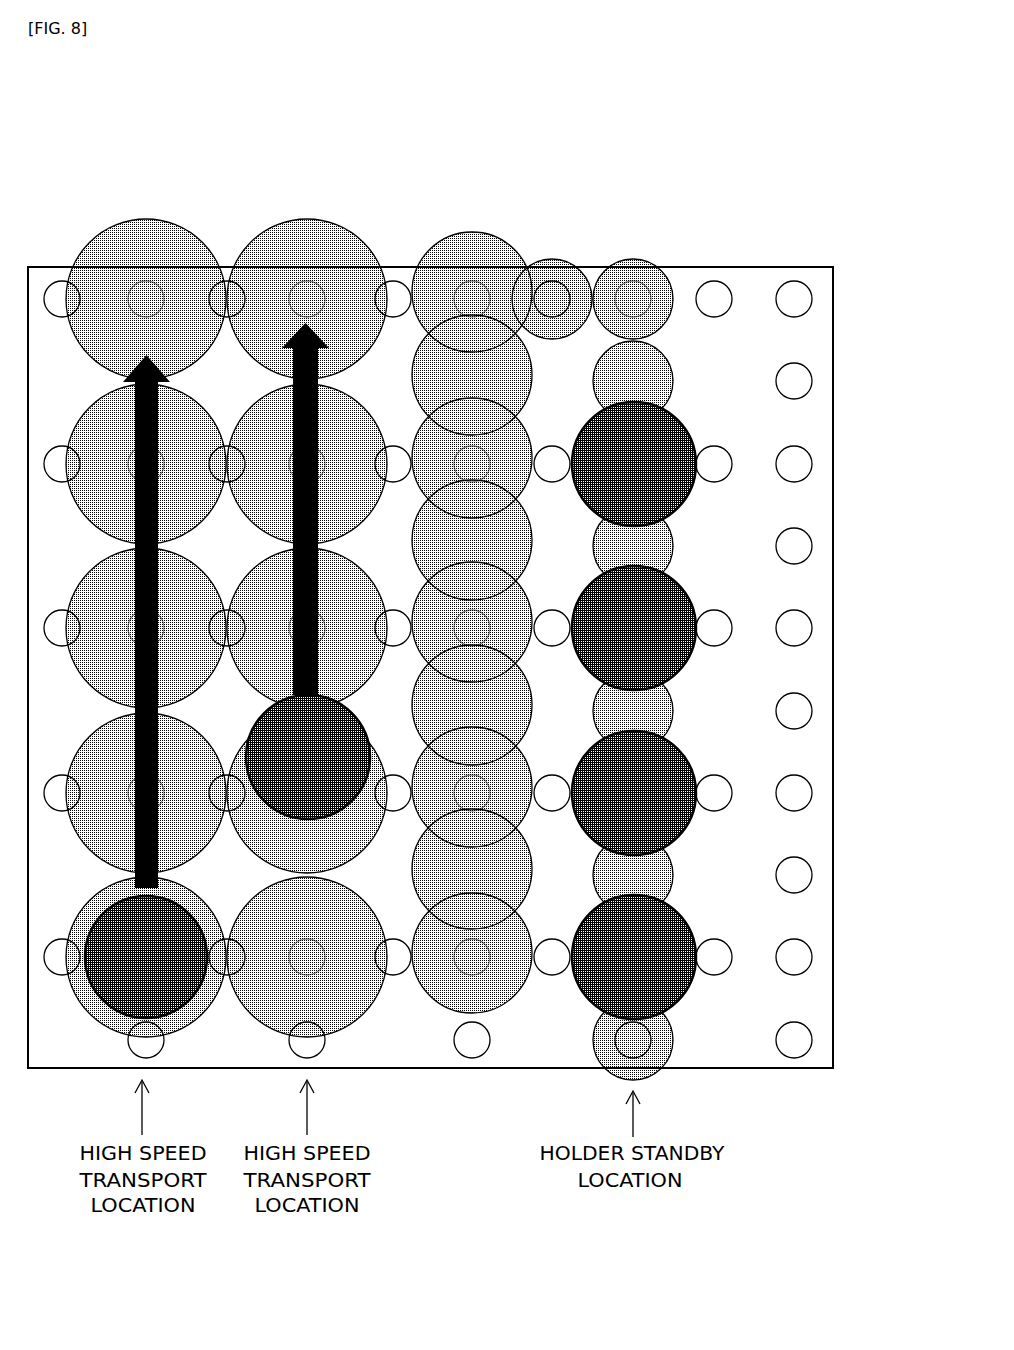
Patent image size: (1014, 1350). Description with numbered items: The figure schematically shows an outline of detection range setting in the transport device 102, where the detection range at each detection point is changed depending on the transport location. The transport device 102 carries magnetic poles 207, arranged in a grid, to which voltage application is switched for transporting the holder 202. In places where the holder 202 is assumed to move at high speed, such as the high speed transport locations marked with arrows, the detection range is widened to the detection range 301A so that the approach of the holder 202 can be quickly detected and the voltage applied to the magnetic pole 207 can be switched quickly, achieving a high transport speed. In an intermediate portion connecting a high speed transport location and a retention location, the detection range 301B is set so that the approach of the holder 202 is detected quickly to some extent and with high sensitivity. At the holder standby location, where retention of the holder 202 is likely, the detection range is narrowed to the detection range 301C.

The transport device 102 is at (684, 102).
The magnetic pole 207 is at (787, 298).
The holder 202 is at (673, 428).
The detection range 301A is at (140, 223).
The detection range 301B is at (468, 258).
The detection range 301C is at (552, 277).